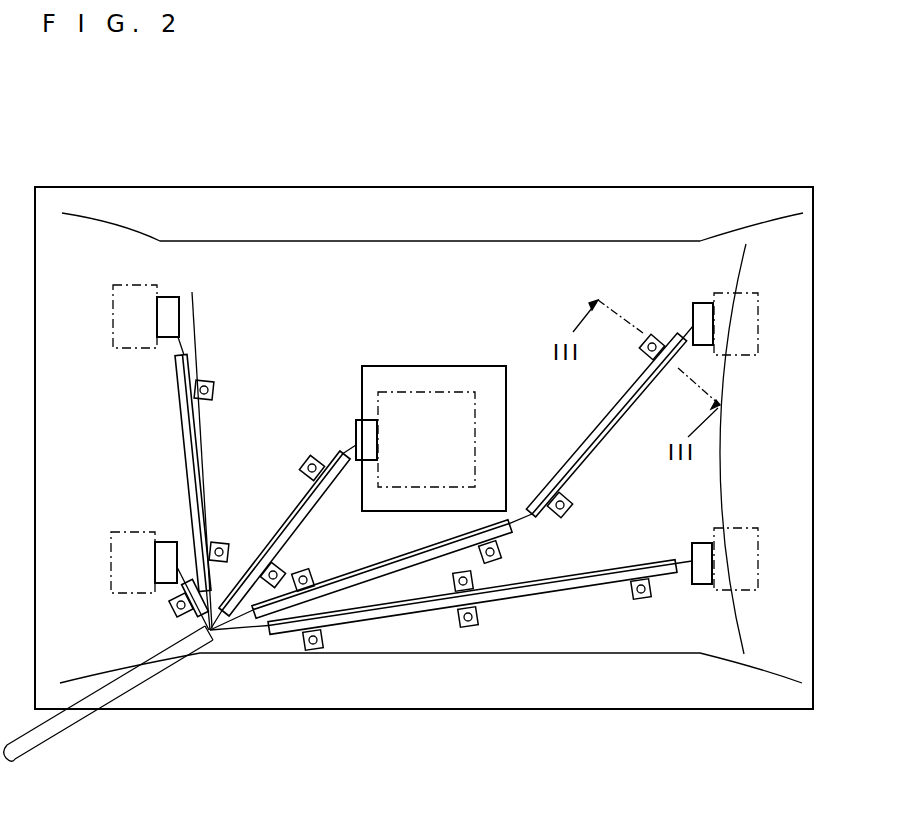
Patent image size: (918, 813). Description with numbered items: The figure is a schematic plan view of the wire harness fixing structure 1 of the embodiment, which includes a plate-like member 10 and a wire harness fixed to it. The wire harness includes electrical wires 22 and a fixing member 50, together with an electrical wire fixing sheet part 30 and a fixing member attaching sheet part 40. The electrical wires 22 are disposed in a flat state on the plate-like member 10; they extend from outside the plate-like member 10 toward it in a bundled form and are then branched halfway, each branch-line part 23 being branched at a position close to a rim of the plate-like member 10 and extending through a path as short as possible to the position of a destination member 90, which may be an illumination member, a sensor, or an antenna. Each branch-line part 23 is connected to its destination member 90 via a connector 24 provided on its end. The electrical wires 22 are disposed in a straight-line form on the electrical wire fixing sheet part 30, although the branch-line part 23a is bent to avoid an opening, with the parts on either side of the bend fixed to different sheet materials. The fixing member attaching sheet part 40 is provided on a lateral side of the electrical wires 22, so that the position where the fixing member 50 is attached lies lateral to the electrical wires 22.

The wire harness fixing structure 1 is at (112, 144).
The plate-like member 10 is at (467, 709).
The electrical wires 22 is at (83, 717).
The branch-line part 23 is at (200, 445).
The branch-line part 23a is at (398, 557).
The connector 24 is at (168, 298).
The electrical wire fixing sheet part 30 is at (182, 420).
The fixing member attaching sheet part 40 is at (215, 388).
The fixing member 50 is at (205, 382).
The destination member 90 is at (113, 328).